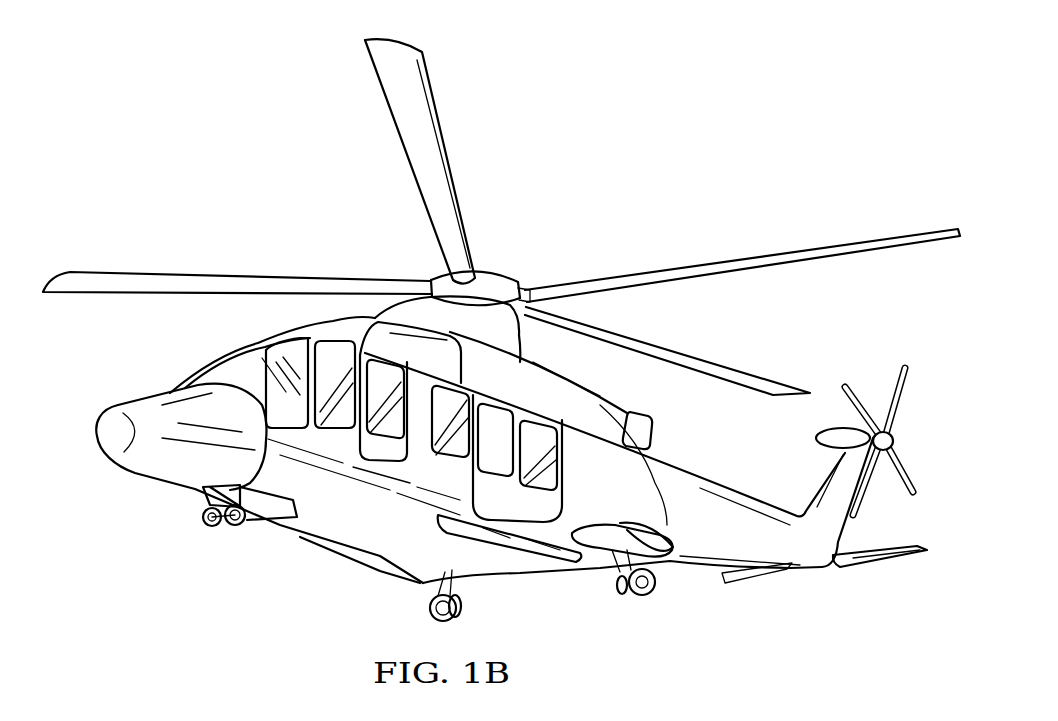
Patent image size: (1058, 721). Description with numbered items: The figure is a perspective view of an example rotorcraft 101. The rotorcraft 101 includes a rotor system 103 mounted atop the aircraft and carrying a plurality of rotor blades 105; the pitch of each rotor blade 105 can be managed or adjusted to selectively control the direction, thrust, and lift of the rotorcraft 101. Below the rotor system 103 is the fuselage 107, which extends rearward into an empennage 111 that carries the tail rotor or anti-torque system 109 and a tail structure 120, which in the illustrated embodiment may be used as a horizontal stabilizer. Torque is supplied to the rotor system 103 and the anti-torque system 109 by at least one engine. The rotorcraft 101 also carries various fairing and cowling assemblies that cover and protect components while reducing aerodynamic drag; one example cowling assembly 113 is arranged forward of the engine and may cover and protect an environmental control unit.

The rotorcraft 101 is at (179, 100).
The rotor system 103 is at (373, 209).
The rotor blades 105 is at (724, 268).
The fuselage 107 is at (307, 527).
The tail rotor or anti-torque system 109 is at (883, 354).
The empennage 111 is at (702, 552).
The cowling assembly 113 is at (350, 308).
The tail structure 120 is at (887, 560).